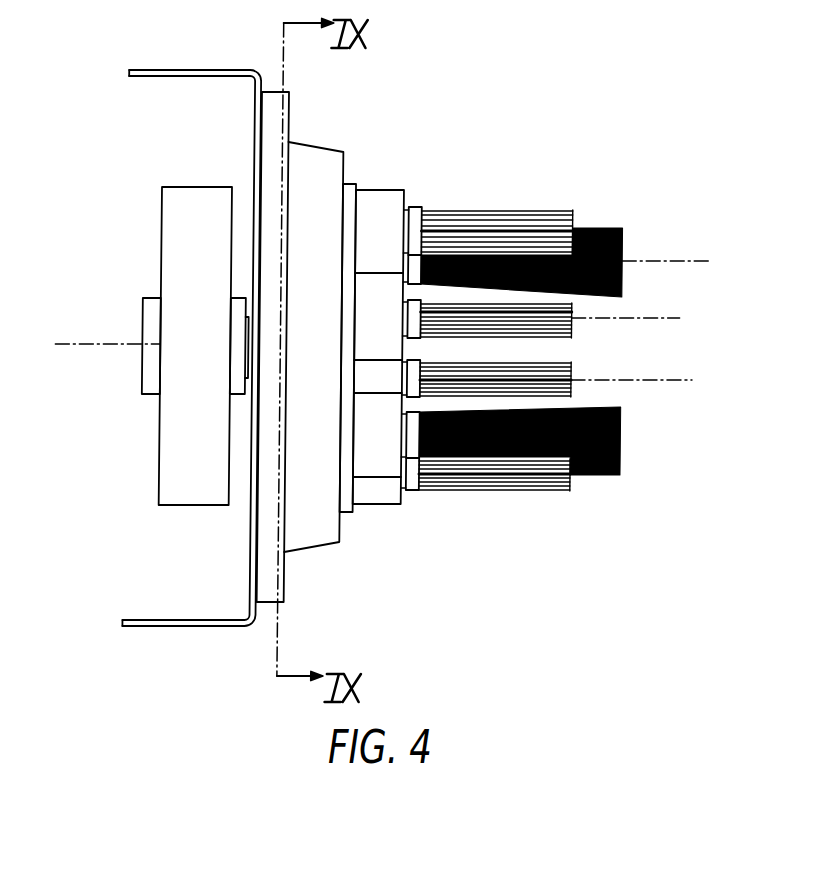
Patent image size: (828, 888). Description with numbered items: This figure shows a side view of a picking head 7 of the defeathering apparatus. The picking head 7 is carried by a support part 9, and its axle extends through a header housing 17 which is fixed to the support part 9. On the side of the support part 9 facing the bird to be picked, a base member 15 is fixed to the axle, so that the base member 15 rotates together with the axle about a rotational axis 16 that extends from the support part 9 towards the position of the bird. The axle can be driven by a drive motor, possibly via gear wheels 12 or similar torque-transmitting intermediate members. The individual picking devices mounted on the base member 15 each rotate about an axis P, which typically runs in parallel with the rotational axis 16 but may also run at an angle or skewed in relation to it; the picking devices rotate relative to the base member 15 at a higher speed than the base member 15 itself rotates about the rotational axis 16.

The picking head 7 is at (456, 546).
The support part 9 is at (165, 73).
The gear wheels 12 is at (173, 205).
The base member 15 is at (345, 492).
The rotational axis 16 is at (105, 348).
The header housing 17 is at (313, 530).
The axis P is at (676, 262).